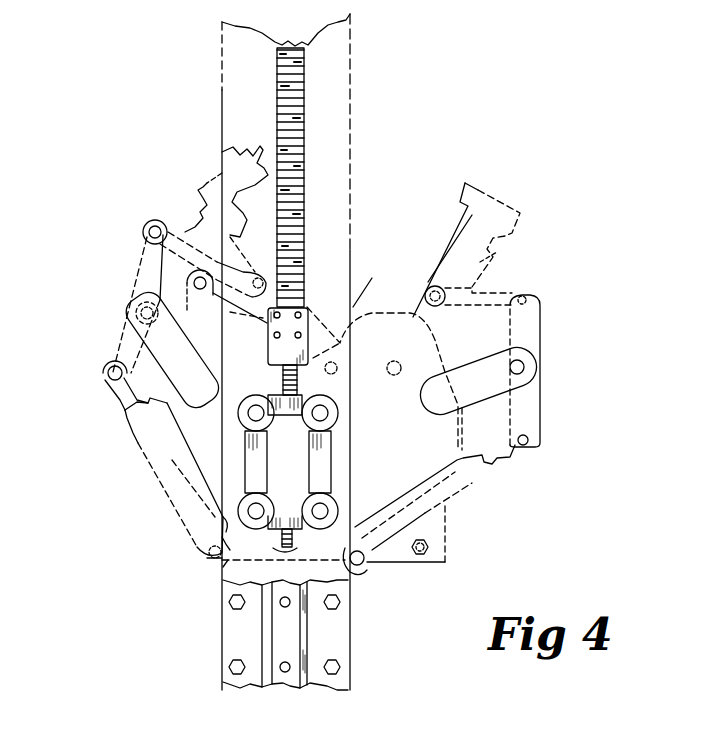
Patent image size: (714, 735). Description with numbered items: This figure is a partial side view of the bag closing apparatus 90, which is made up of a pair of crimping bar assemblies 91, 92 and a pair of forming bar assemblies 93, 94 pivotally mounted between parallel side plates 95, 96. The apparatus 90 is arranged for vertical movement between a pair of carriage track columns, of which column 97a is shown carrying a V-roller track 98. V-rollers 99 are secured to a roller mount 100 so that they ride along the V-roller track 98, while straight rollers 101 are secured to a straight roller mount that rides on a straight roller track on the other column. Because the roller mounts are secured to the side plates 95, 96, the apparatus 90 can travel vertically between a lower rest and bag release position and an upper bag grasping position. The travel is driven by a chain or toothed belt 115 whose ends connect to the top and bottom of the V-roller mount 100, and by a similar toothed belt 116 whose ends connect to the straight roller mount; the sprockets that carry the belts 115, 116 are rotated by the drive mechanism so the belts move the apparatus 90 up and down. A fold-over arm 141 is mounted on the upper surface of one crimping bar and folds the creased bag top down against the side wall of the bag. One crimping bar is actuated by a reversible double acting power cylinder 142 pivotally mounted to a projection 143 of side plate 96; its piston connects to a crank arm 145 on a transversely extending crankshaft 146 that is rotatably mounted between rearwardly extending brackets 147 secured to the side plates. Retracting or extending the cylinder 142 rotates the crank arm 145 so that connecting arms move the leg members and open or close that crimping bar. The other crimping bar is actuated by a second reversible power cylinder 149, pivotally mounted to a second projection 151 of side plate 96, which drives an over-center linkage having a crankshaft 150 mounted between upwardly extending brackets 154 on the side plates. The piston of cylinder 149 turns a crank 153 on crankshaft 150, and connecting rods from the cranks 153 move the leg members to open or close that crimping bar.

The bag closing apparatus 90 is at (112, 215).
The crimping bar assembly 91 is at (186, 214).
The crimping bar assembly 92 is at (510, 190).
The forming bar assembly 93 is at (520, 246).
The forming bar assembly 94 is at (262, 225).
The side plate 95 is at (438, 562).
The side plate 96 is at (388, 312).
The carriage track column 97a is at (222, 83).
The V-roller track 98 is at (300, 637).
The V-rollers 99 is at (223, 567).
The straight rollers 101 is at (225, 524).
The roller mount 100 is at (330, 446).
The toothed belt 115 is at (318, 74).
The toothed belt 116 is at (288, 351).
The fold-over arm 141 is at (219, 146).
The power cylinder 142 is at (458, 503).
The projection 143 is at (358, 572).
The crank arm 145 is at (540, 318).
The crankshaft 146 is at (540, 350).
The bracket 147 is at (540, 385).
The power cylinder 149 is at (163, 480).
The crankshaft 150 is at (143, 311).
The second projection 151 is at (207, 558).
The crank 153 is at (140, 258).
The bracket 154 is at (140, 327).